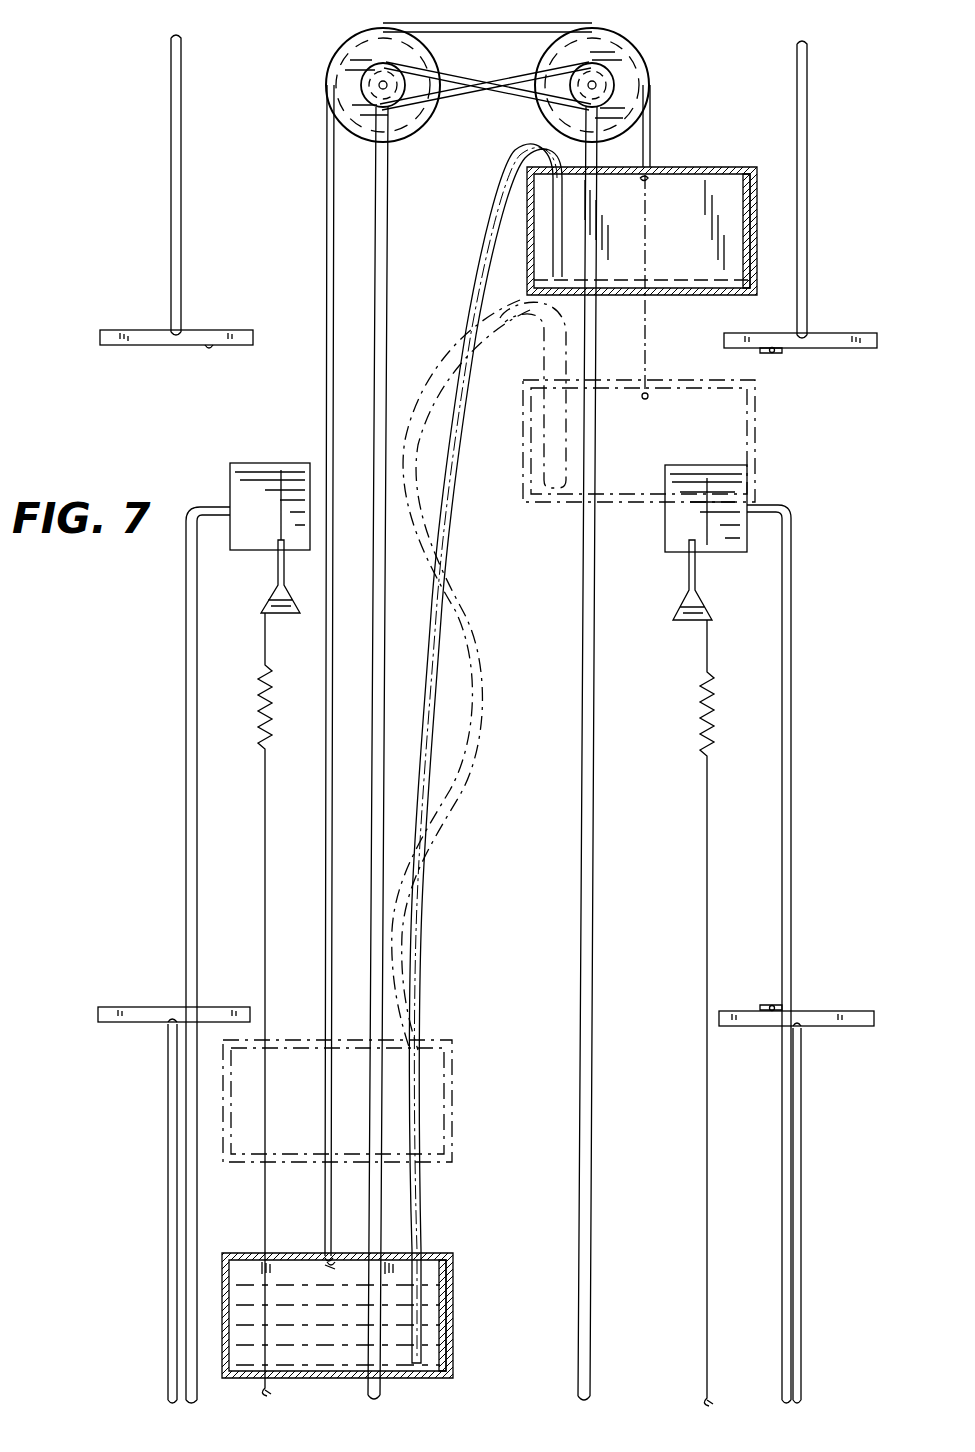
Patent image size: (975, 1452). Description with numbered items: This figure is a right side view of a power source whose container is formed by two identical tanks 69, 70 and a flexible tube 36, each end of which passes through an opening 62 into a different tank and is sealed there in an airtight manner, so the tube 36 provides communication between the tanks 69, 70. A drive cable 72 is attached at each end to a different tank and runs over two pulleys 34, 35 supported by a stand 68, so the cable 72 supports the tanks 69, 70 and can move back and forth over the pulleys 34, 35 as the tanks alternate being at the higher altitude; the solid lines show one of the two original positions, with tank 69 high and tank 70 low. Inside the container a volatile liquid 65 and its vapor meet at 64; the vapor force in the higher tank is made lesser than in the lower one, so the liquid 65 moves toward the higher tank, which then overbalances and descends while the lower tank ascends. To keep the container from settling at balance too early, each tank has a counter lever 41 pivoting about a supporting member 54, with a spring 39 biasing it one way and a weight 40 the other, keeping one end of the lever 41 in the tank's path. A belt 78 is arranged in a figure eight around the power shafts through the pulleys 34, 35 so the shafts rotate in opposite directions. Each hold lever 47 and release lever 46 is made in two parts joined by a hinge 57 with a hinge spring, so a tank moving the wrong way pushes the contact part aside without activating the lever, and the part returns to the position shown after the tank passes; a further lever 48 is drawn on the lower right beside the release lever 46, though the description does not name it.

The pulley 34 is at (334, 71).
The pulley 35 is at (655, 80).
The belt 78 is at (485, 76).
The drive cable 72 is at (325, 383).
The stand 68 is at (388, 225).
The tank 69 is at (695, 168).
The volatile liquid 65 is at (730, 212).
The liquid-vapor interface 64 is at (668, 285).
The opening 62 is at (518, 139).
The flexible tube 36 is at (460, 432).
The counter lever 41 is at (225, 464).
The weight 40 is at (288, 618).
The spring 39 is at (268, 709).
The supporting member 54 is at (186, 670).
The hold lever 47 is at (150, 345).
The hinge 57 is at (774, 352).
The release lever 46 is at (118, 1008).
The lower right platform 48 is at (861, 1011).
The tank 70 is at (453, 1280).